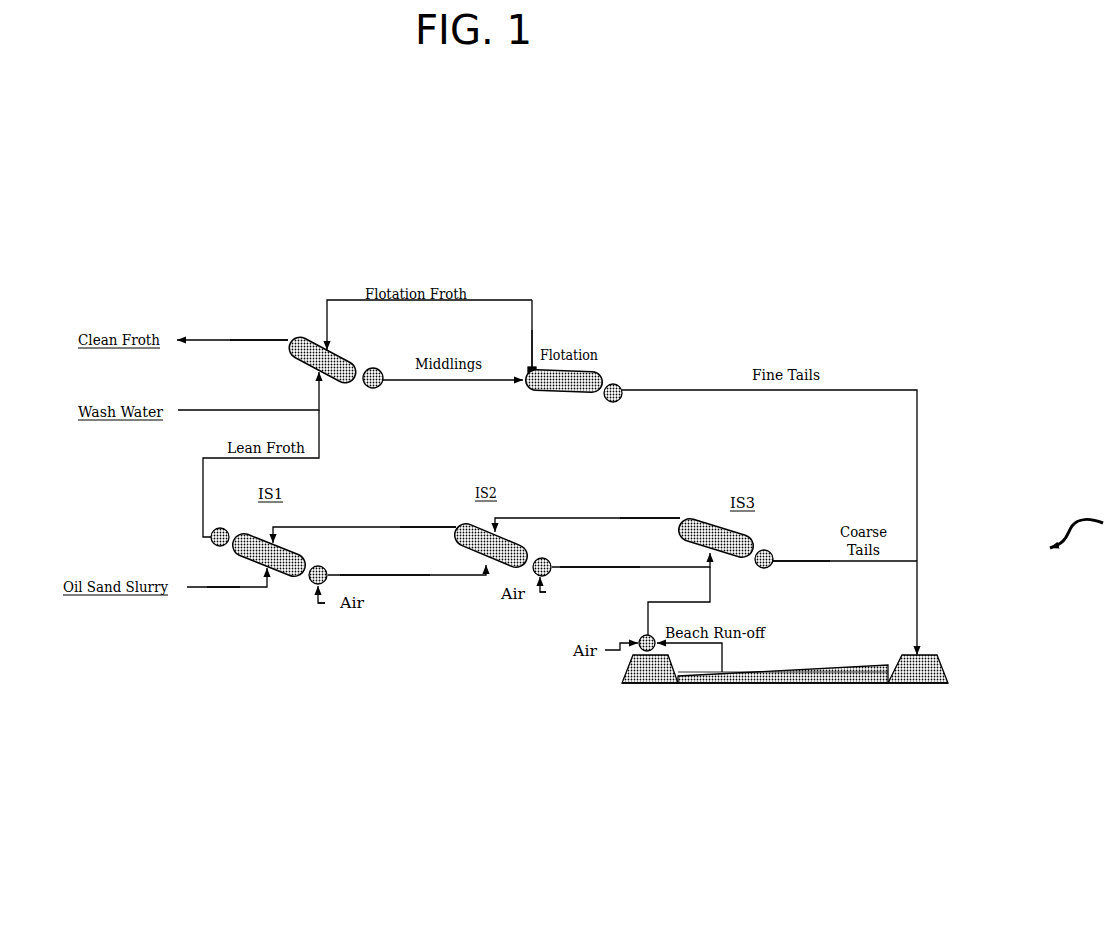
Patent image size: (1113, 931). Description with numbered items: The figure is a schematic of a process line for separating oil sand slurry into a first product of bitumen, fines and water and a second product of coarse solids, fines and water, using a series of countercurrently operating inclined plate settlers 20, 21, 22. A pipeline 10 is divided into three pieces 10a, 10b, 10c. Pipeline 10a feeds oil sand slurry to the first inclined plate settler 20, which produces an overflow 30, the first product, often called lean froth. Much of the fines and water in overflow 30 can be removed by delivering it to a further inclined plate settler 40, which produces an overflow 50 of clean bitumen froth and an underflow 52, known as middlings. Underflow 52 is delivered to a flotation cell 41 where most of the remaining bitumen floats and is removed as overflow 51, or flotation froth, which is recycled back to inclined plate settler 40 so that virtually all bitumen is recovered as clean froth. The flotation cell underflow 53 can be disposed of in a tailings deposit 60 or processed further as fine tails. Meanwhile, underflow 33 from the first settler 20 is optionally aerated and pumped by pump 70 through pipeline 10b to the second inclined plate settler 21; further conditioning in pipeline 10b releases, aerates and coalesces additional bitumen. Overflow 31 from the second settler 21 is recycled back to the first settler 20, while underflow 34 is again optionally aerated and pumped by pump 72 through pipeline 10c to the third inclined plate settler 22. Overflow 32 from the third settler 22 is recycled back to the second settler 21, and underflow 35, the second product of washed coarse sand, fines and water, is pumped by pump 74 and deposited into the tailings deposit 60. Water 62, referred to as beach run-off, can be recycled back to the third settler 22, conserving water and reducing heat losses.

The pipeline 10 is at (195, 602).
The pipeline piece 10a is at (207, 587).
The pipeline piece 10b is at (385, 577).
The pipeline piece 10c is at (577, 570).
The first inclined plate settler 20 is at (288, 578).
The second inclined plate settler 21 is at (505, 570).
The third inclined plate settler 22 is at (730, 560).
The overflow 30 is at (222, 529).
The overflow 31 is at (456, 528).
The overflow 32 is at (684, 522).
The underflow 33 is at (318, 585).
The underflow 34 is at (535, 578).
The underflow 35 is at (765, 567).
The inclined plate settler 40 is at (313, 343).
The flotation cell 41 is at (594, 372).
The overflow 50 is at (290, 338).
The overflow 51 is at (532, 372).
The underflow 52 is at (374, 368).
The underflow 53 is at (617, 385).
The tailings deposit 60 is at (858, 683).
The water 62 is at (713, 685).
The pump 70 is at (322, 568).
The pump 72 is at (547, 562).
The pump 74 is at (771, 552).